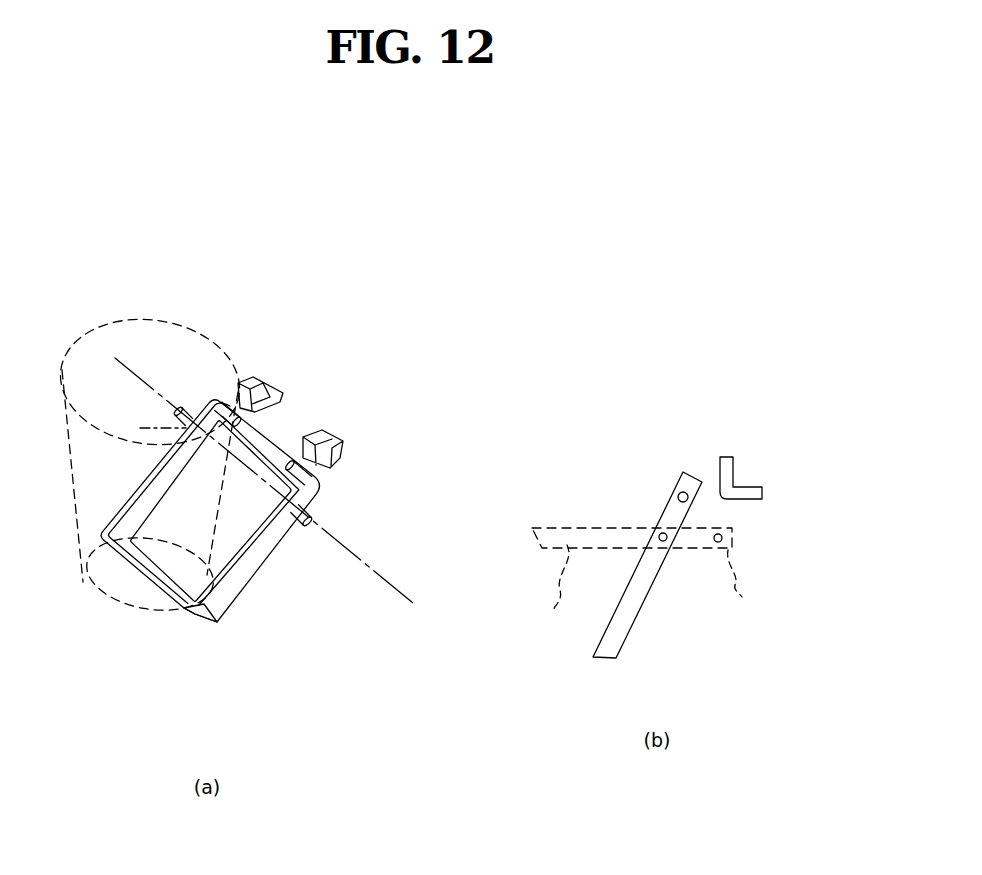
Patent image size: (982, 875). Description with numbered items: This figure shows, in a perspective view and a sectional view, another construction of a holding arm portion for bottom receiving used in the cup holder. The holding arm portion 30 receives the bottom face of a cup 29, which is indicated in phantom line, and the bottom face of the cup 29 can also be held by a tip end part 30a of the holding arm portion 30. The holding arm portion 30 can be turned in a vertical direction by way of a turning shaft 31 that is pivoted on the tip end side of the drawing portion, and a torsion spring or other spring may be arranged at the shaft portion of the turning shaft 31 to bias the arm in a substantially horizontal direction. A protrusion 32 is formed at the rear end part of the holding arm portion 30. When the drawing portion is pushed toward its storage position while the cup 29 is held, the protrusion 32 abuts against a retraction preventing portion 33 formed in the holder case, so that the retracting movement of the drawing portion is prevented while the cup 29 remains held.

The cup 29 is at (128, 338).
The holding arm portion for bottom receiving 30 is at (233, 581).
The tip end part 30a is at (217, 623).
The turning shaft 31 is at (195, 409).
The protrusion 32 is at (241, 421).
The retraction preventing portion 33 is at (254, 377).